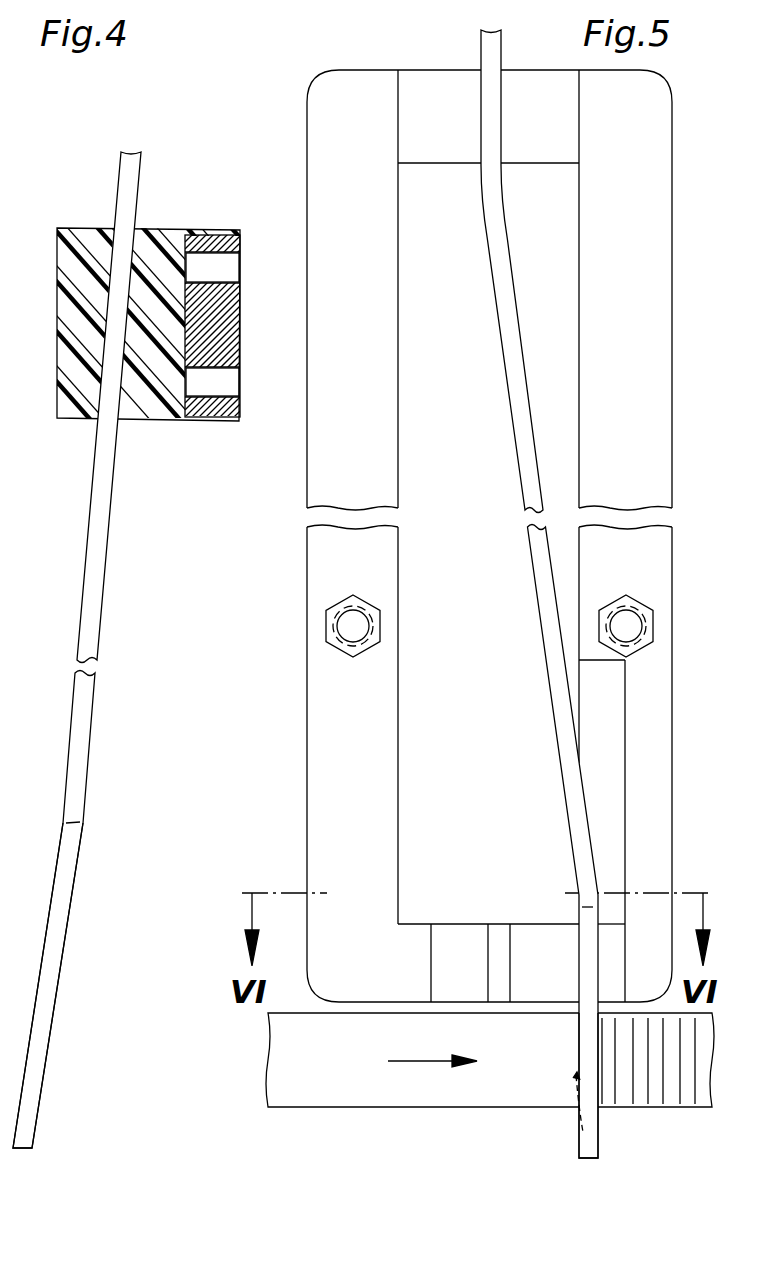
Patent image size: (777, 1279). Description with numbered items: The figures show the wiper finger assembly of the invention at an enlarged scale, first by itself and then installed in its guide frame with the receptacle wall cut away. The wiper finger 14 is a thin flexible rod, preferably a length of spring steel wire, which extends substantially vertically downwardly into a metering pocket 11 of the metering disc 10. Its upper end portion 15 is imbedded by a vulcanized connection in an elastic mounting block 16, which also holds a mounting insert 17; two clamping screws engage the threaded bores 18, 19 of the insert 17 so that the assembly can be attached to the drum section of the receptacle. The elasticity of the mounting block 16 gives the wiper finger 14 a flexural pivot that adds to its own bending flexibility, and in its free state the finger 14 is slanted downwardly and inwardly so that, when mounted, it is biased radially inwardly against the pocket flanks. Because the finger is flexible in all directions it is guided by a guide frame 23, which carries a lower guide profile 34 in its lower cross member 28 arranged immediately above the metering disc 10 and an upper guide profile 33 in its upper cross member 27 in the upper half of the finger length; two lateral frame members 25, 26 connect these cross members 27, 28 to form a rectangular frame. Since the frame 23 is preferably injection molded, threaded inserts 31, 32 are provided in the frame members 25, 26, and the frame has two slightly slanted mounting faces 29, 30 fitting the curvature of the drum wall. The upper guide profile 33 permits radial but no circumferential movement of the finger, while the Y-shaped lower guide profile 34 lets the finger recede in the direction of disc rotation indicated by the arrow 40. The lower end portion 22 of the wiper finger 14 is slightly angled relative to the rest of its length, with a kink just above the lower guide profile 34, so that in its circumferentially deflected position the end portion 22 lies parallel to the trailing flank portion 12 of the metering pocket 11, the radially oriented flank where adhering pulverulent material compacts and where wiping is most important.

In FIG. 5, the metering disc 10 is at (337, 1083).
In FIG. 5, the metering pocket 11 is at (688, 1090).
In FIG. 5, the trailing flank portion 12 is at (583, 1132).
In FIG. 4, the wiper finger 14 is at (95, 597).
In FIG. 5, the wiper finger 14 is at (513, 366).
In FIG. 4, the upper end portion 15 is at (128, 188).
In FIG. 4, the elastic mounting block 16 is at (147, 403).
In FIG. 4, the mounting insert 17 is at (215, 338).
In FIG. 4, the threaded bore 18 is at (222, 268).
In FIG. 4, the threaded bore 19 is at (215, 388).
In FIG. 4, the lower end portion 22 is at (62, 900).
In FIG. 5, the lower end portion 22 is at (590, 1138).
In FIG. 5, the guide frame 23 is at (303, 672).
In FIG. 5, the lateral frame member 25 is at (330, 758).
In FIG. 5, the lateral frame member 26 is at (645, 748).
In FIG. 5, the top cross member 27 is at (447, 85).
In FIG. 5, the bottom cross member 28 is at (414, 945).
In FIG. 5, the mounting face 29 is at (371, 399).
In FIG. 5, the mounting face 30 is at (639, 399).
In FIG. 5, the threaded insert 31 is at (348, 628).
In FIG. 5, the threaded insert 32 is at (626, 626).
In FIG. 5, the upper guide profile 33 is at (481, 88).
In FIG. 5, the lower guide profile 34 is at (500, 945).
In FIG. 5, the arrow 40 is at (420, 1065).